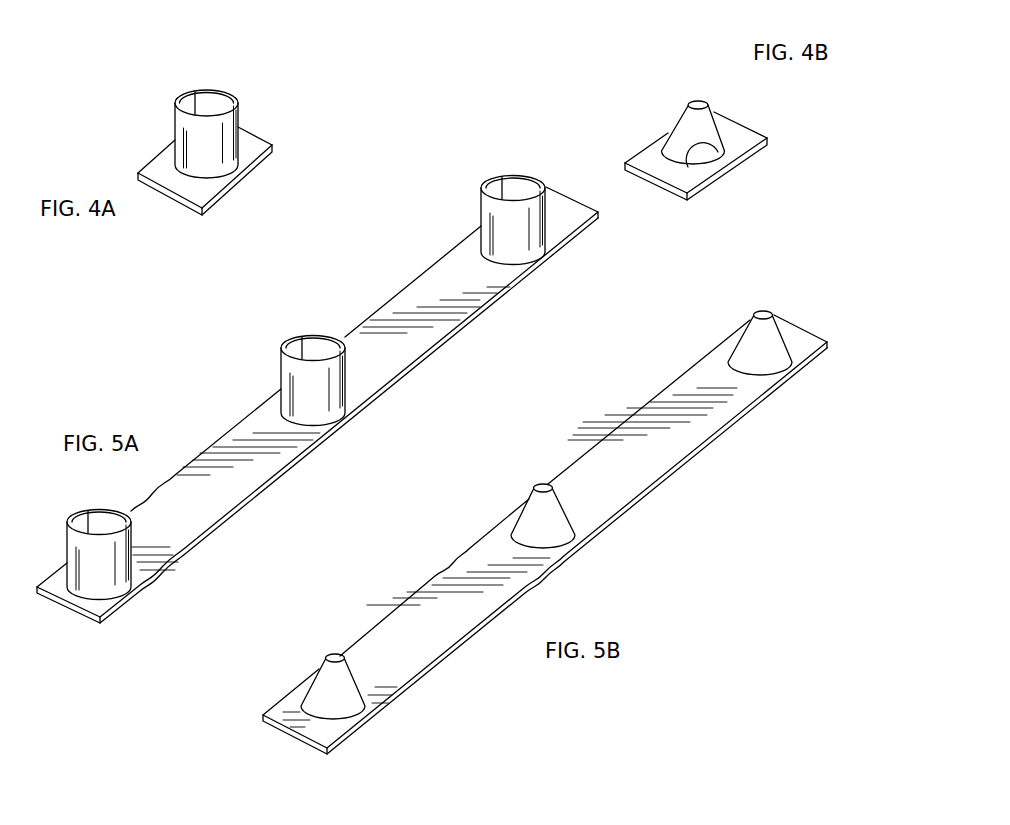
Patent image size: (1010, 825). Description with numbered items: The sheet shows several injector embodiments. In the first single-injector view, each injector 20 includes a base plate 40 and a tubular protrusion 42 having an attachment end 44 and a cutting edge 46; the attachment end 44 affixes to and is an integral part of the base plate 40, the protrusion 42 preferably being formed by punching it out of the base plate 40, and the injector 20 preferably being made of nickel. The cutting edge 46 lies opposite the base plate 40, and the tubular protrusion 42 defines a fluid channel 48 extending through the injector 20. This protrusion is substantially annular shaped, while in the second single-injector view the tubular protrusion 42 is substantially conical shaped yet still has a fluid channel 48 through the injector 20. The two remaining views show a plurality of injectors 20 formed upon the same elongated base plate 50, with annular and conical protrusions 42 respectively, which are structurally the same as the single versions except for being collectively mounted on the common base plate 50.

In FIG. 4A, the injector 20 is at (272, 123).
In FIG. 4B, the injector 20 is at (766, 115).
In FIG. 4A, the base plate 40 is at (160, 165).
In FIG. 4B, the base plate 40 is at (647, 158).
In FIG. 4A, the tubular protrusion 42 is at (238, 115).
In FIG. 4B, the tubular protrusion 42 is at (708, 127).
In FIG. 5A, the tubular protrusion 42 is at (95, 508).
In FIG. 5B, the tubular protrusion 42 is at (313, 675).
In FIG. 4A, the attachment end 44 is at (242, 163).
In FIG. 4B, the attachment end 44 is at (713, 142).
In FIG. 4A, the cutting edge 46 is at (217, 88).
In FIG. 4A, the fluid channel 48 is at (203, 90).
In FIG. 4B, the fluid channel 48 is at (703, 102).
In FIG. 5A, the base plate 50 is at (398, 341).
In FIG. 5B, the base plate 50 is at (602, 497).